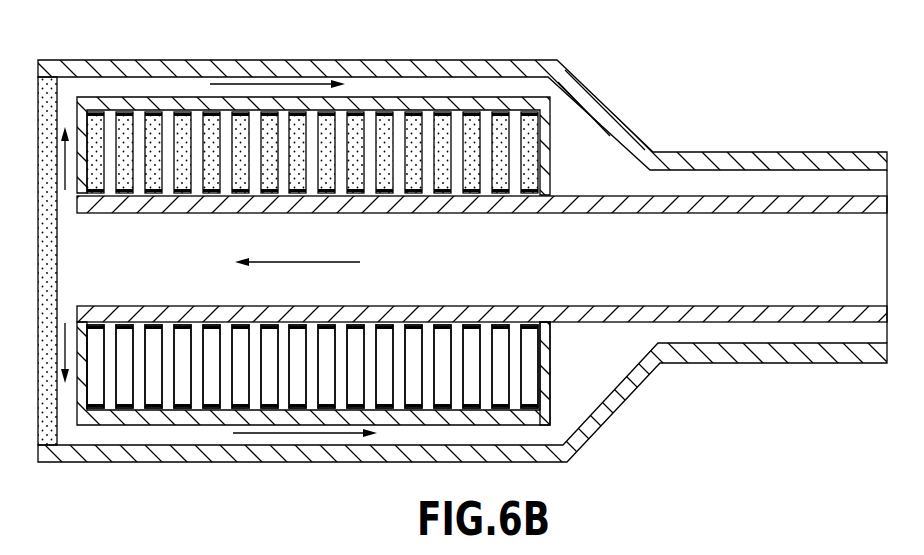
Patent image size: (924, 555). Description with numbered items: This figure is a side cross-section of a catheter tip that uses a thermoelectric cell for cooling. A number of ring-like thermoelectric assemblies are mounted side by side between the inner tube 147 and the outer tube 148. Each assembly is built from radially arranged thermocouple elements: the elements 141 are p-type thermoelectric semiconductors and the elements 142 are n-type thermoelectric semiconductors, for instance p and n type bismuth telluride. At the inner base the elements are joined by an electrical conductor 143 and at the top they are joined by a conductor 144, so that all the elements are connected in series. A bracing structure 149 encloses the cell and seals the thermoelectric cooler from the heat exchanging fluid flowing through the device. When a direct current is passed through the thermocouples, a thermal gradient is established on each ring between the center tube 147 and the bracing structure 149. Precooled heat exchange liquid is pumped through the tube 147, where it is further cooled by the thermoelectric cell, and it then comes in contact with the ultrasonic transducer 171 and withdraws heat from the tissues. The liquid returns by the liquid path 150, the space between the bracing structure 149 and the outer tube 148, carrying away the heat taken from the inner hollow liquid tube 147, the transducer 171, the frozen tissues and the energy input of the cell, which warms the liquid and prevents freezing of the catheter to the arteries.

The outer tube 148 is at (140, 58).
The liquid path 150 is at (157, 82).
The p-type thermoelectric semiconductor element 141 is at (353, 128).
The conductor 144 is at (384, 112).
The inner tube 147 is at (510, 213).
The ultrasonic transducer 171 is at (58, 264).
The electrical conductor 143 is at (552, 344).
The bracing structure 149 is at (153, 426).
The n-type thermoelectric semiconductor element 142 is at (243, 380).